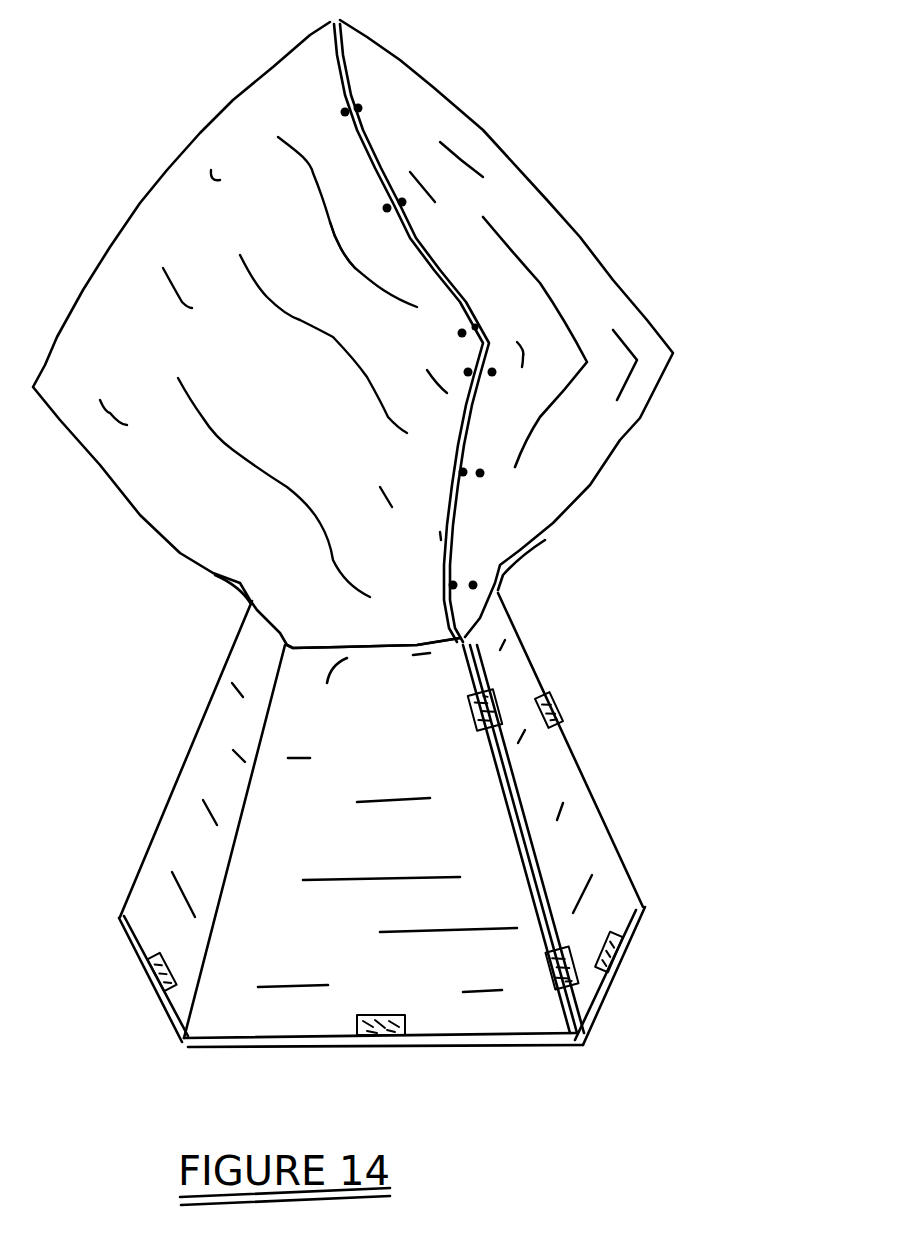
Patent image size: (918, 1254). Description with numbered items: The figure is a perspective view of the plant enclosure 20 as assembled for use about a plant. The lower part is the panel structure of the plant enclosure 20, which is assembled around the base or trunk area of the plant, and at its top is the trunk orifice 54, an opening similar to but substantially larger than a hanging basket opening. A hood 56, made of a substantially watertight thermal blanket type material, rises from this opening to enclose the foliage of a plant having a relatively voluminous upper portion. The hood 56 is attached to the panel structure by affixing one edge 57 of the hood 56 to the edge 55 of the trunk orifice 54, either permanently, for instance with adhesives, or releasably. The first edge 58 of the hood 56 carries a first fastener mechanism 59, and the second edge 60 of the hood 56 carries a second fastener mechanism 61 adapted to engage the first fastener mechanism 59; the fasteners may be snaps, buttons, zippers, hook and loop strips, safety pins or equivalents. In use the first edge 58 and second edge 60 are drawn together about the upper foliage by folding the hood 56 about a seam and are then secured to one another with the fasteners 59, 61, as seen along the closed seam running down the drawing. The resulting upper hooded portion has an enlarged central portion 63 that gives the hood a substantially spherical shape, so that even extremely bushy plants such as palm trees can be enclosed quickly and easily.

The plant enclosure 20 is at (646, 658).
The trunk orifice 54 is at (280, 645).
The edge of the trunk orifice 55 is at (410, 710).
The hood 56 is at (633, 208).
The edge of the hood 57 is at (348, 638).
The first edge of the hood 58 is at (493, 422).
The first fastener mechanism 59 is at (490, 320).
The second edge of the hood 60 is at (410, 247).
The second fastener mechanism 61 is at (458, 475).
The enlarged central portion 63 is at (680, 380).